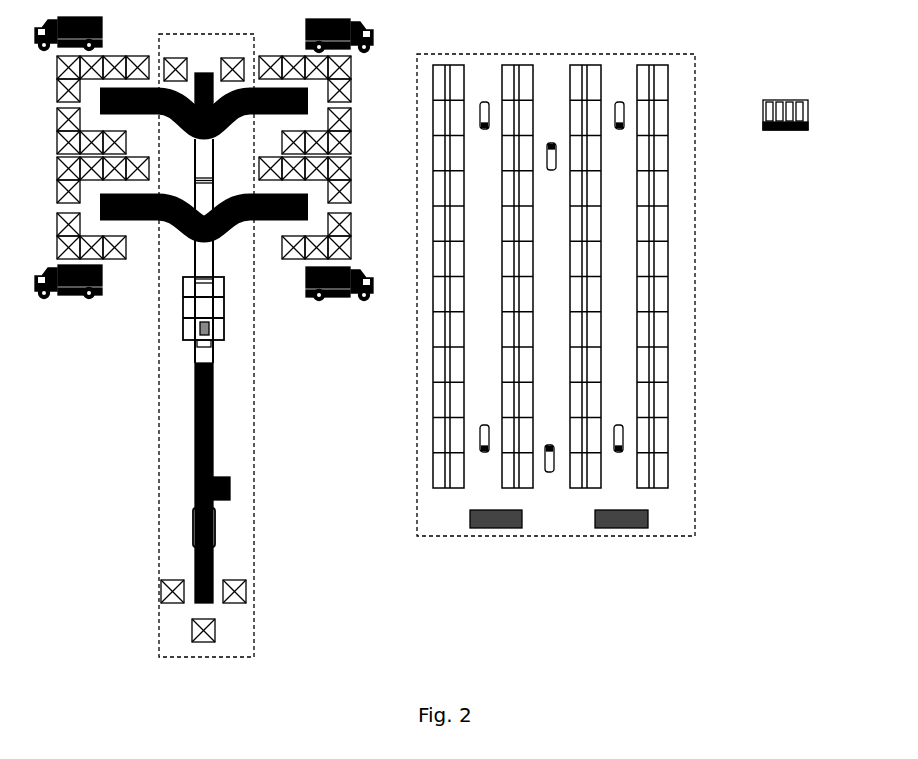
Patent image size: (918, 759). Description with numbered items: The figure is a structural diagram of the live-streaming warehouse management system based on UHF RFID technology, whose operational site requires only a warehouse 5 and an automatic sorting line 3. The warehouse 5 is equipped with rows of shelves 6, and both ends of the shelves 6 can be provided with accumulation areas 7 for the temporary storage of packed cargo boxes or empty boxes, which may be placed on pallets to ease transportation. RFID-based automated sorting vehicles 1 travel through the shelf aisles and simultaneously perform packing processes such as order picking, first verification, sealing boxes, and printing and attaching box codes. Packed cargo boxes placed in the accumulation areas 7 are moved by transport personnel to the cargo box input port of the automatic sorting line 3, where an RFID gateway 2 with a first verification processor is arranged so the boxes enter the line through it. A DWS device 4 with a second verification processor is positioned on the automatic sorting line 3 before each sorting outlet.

The RFID-based automated sorting vehicle 1 is at (619, 426).
The RFID gateway 2 is at (230, 483).
The automatic sorting line 3 is at (254, 398).
The DWS device 4 is at (223, 315).
The warehouse 5 is at (695, 98).
The shelves 6 is at (657, 273).
The accumulation areas 7 is at (522, 525).